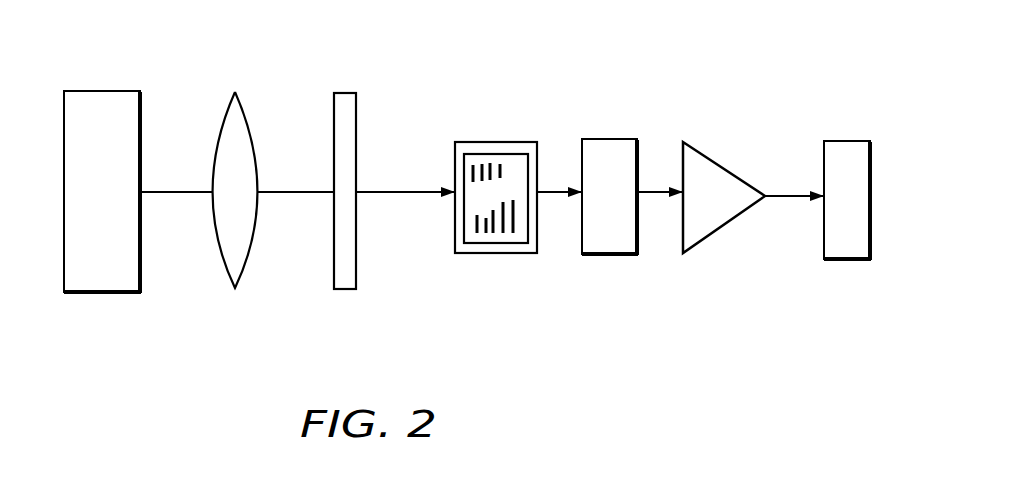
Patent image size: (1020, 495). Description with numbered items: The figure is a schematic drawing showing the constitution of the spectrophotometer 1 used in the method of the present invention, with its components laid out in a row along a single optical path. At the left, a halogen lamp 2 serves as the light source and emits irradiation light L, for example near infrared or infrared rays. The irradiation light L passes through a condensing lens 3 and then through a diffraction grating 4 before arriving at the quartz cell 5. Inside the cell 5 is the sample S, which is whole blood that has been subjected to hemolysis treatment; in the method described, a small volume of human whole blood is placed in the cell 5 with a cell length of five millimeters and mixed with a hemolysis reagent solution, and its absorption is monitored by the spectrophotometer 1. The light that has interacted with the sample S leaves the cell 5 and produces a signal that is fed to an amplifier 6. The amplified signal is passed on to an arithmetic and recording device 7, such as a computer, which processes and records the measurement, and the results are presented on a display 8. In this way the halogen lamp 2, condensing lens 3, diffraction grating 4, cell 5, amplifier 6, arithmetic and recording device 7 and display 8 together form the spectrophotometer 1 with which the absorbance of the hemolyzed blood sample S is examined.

The spectrophotometer 1 is at (390, 307).
The halogen lamp 2 is at (112, 91).
The condensing lens 3 is at (235, 92).
The diffraction grating 4 is at (347, 93).
The quartz cell 5 is at (518, 190).
The amplifier 6 is at (615, 140).
The arithmetic and recording device 7 is at (710, 154).
The display 8 is at (841, 141).
The irradiation light L is at (174, 192).
The whole blood sample S is at (499, 232).